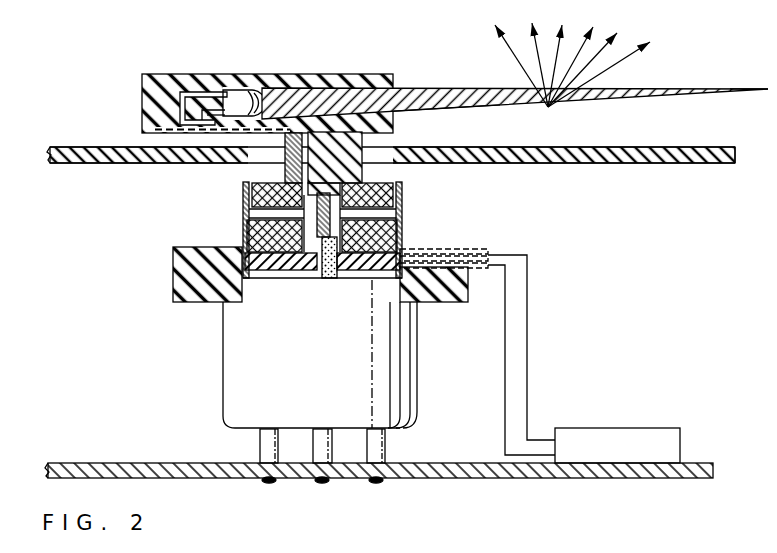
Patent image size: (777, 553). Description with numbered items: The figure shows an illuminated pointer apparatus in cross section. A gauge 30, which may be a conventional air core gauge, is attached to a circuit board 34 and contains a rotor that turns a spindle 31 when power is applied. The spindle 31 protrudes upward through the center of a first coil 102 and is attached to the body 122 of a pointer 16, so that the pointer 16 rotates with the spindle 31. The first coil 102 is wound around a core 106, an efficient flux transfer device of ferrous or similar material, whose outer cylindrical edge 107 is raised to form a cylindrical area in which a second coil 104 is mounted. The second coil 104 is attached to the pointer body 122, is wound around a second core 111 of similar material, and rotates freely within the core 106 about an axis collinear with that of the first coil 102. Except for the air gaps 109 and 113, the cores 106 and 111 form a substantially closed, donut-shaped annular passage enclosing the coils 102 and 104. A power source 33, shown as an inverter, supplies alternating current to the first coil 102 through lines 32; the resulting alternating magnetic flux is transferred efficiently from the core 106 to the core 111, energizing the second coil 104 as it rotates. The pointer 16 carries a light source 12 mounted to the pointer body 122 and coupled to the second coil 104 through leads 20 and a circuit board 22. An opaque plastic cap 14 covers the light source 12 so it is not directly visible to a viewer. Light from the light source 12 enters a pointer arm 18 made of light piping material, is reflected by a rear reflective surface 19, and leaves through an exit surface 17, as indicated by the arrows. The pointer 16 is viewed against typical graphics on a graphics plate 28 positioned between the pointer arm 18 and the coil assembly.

The light source 12 is at (247, 91).
The opaque plastic cap 14 is at (312, 75).
The pointer 16 is at (456, 81).
The exit surface 17 is at (712, 86).
The pointer arm 18 is at (432, 115).
The rear reflective surface 19 is at (520, 114).
The leads 20 is at (200, 97).
The circuit board 22 is at (172, 134).
The graphics plate 28 is at (613, 160).
The gauge 30 is at (247, 388).
The spindle 31 is at (325, 280).
The lines 32 is at (505, 334).
The power source 33 is at (660, 437).
The circuit board 34 is at (113, 462).
The first coil 102 is at (256, 256).
The second coil 104 is at (402, 212).
The core 106 is at (311, 238).
The outer cylindrical edge 107 is at (402, 231).
The air gap 109 is at (250, 186).
The core 111 is at (258, 181).
The air gap 113 is at (243, 215).
The pointer body 122 is at (352, 182).